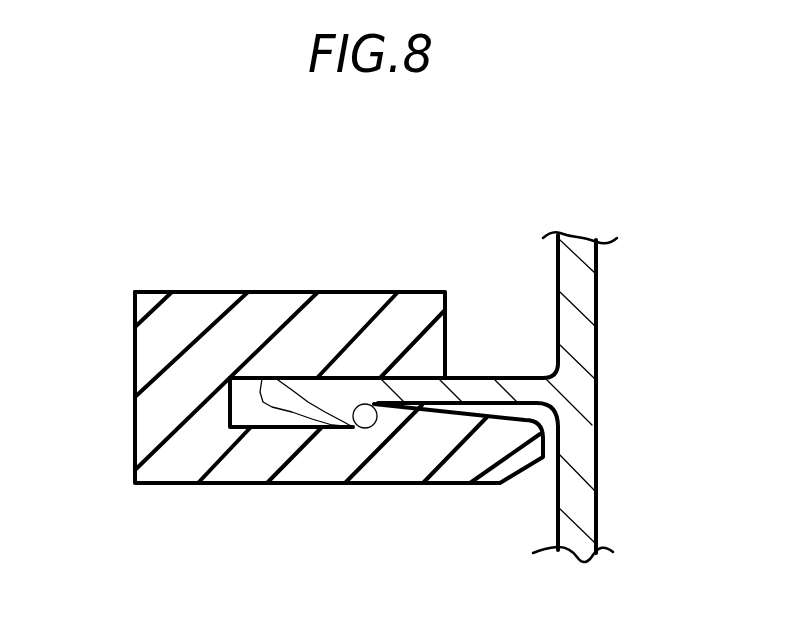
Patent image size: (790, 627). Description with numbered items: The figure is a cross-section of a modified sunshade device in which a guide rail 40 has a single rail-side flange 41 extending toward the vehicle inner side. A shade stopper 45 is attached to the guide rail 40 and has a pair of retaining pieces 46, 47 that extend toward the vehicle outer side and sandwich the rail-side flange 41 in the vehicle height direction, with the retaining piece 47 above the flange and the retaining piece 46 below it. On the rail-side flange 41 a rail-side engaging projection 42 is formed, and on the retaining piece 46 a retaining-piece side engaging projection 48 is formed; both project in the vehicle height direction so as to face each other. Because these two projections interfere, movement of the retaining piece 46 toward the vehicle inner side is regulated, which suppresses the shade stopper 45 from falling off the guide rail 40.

The guide rail 40 is at (613, 377).
The rail-side flange 41 is at (553, 425).
The rail-side engaging projection 42 is at (312, 424).
The shade stopper 45 is at (126, 352).
The retaining piece 46 is at (230, 483).
The retaining piece 47 is at (287, 291).
The retaining-piece side engaging projection 48 is at (366, 428).